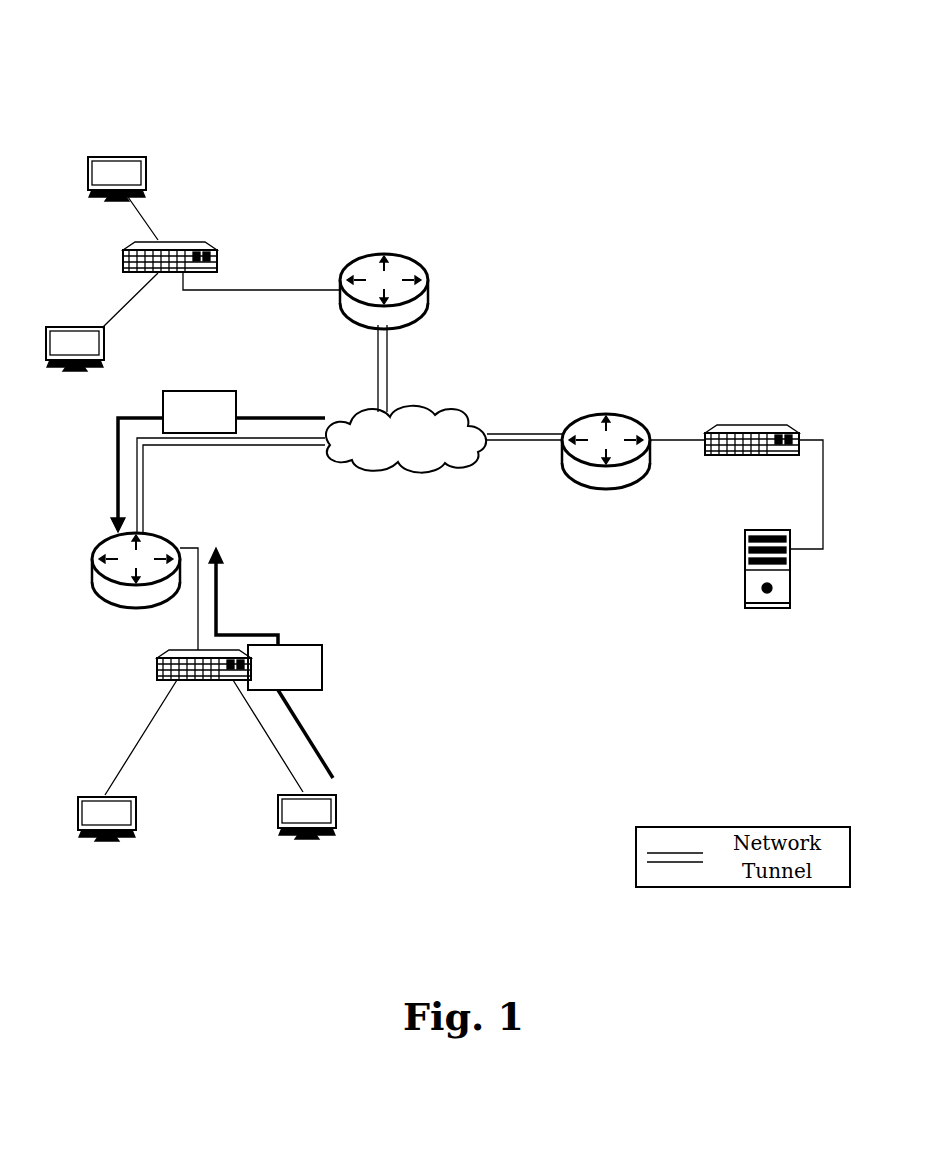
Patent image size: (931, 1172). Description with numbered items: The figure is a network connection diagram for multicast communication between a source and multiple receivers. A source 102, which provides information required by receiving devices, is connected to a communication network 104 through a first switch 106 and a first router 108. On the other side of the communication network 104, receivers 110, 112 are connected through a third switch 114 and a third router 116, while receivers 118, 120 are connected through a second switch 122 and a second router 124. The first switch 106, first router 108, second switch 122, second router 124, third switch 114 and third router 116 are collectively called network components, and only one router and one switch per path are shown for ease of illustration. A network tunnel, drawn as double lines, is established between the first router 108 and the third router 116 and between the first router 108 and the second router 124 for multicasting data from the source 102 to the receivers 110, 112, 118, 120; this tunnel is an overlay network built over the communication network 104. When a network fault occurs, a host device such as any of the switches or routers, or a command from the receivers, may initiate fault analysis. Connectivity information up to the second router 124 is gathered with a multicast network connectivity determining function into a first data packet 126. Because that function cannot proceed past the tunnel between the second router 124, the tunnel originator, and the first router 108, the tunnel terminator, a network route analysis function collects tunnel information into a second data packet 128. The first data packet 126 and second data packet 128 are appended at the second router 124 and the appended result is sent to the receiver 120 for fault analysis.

The source 102 is at (757, 608).
The communication network 104 is at (437, 412).
The first switch 106 is at (785, 425).
The first router 108 is at (625, 420).
The receiver 110 is at (148, 172).
The receiver 112 is at (103, 355).
The third switch 114 is at (216, 253).
The third router 116 is at (418, 275).
The receiver 118 is at (136, 812).
The receiver 120 is at (337, 815).
The second switch 122 is at (155, 663).
The second router 124 is at (106, 540).
The first data packet 126 is at (271, 663).
The second data packet 128 is at (218, 461).